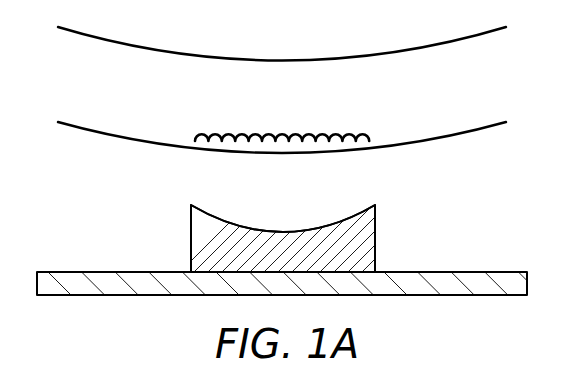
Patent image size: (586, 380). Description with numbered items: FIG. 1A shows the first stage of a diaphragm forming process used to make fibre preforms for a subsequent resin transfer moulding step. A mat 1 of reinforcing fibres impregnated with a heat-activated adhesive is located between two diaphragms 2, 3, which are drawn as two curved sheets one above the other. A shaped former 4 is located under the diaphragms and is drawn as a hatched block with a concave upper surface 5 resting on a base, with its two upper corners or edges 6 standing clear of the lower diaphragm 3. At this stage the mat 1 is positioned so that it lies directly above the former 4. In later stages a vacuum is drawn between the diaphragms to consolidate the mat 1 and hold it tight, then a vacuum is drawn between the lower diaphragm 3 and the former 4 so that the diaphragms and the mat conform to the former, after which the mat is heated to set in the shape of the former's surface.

The mat 1 is at (334, 134).
The diaphragm 2 is at (469, 136).
The lower diaphragm 3 is at (469, 41).
The shaped former 4 is at (376, 237).
The concave surface 5 is at (279, 223).
The block edges 6 is at (191, 206).